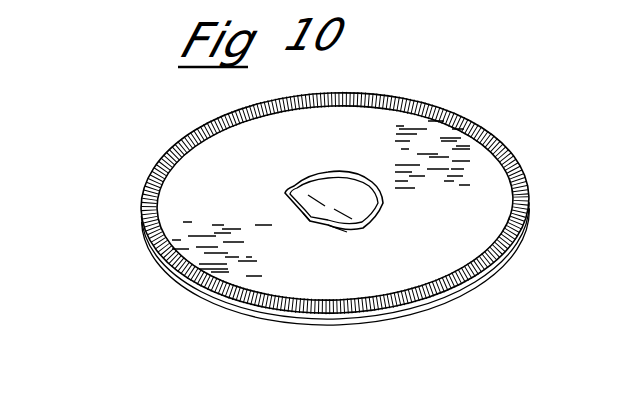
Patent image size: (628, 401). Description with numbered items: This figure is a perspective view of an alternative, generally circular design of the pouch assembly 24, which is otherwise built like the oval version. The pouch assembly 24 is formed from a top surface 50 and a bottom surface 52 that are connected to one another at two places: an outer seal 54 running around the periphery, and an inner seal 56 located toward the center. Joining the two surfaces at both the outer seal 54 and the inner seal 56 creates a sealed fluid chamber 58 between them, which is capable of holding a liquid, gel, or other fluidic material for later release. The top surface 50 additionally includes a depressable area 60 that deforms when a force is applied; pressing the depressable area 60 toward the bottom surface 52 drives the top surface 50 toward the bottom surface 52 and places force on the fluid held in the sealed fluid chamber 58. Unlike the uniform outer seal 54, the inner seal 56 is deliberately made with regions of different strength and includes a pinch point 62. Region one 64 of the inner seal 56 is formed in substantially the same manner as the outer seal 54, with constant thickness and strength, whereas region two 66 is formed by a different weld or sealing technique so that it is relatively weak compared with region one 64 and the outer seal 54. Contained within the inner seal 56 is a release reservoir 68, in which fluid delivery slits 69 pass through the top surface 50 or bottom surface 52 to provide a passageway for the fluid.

The pouch assembly 24 is at (396, 97).
The top surface 50 is at (470, 296).
The bottom surface 52 is at (490, 198).
The outer seal 54 is at (515, 235).
The inner seal 56 is at (286, 196).
The sealed fluid chamber 58 is at (236, 140).
The depressable area 60 is at (508, 272).
The pinch point 62 is at (306, 226).
The region one 64 is at (340, 232).
The region two 66 is at (386, 203).
The release reservoir 68 is at (317, 183).
The fluid delivery slits 69 is at (346, 213).